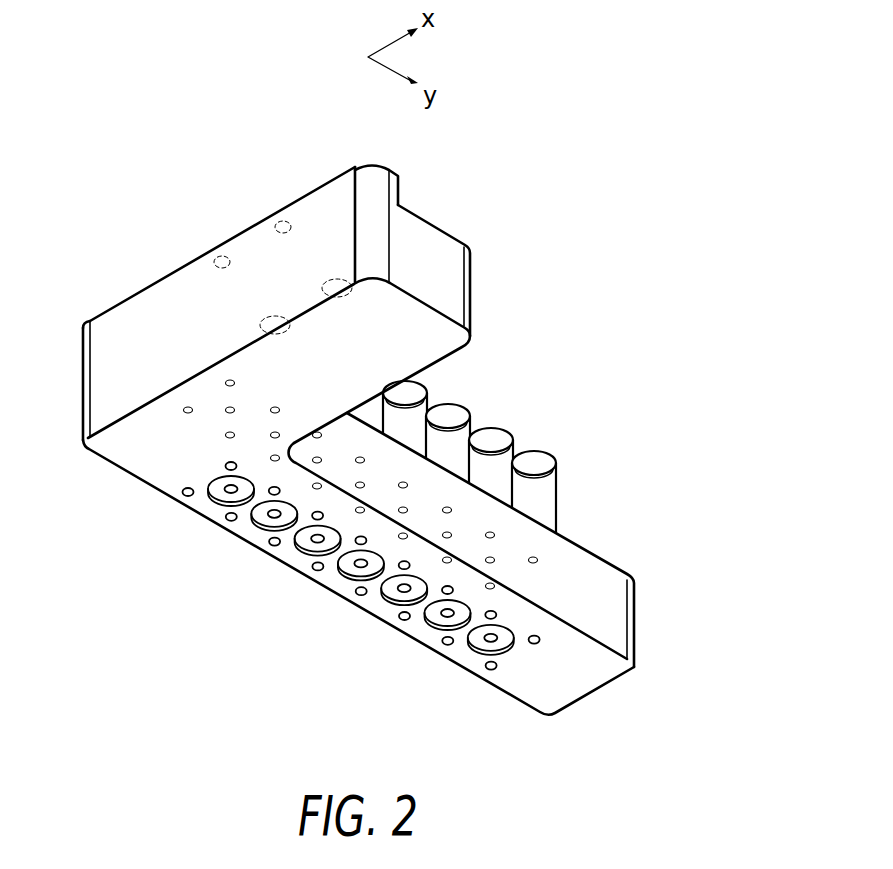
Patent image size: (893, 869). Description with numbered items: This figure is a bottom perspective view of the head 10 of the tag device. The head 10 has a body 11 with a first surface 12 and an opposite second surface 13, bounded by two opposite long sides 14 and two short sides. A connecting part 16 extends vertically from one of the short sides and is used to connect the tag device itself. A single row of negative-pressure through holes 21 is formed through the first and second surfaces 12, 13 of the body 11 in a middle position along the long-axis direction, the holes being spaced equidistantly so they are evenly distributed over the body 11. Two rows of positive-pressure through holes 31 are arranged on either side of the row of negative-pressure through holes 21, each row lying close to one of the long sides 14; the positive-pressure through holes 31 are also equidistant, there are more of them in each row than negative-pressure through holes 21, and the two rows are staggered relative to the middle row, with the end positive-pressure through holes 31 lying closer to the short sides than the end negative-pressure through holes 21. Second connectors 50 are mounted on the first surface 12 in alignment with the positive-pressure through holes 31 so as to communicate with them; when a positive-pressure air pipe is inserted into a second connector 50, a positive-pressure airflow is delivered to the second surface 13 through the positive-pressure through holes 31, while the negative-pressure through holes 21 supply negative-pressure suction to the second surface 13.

The head 10 is at (147, 173).
The body 11 is at (654, 627).
The first surface 12 is at (593, 554).
The second surface 13 is at (122, 452).
The long sides 14 is at (343, 597).
The connecting part 16 is at (428, 243).
The negative-pressure through holes 21 is at (228, 494).
The positive-pressure through holes 31 is at (184, 496).
The second connectors 50 is at (546, 498).